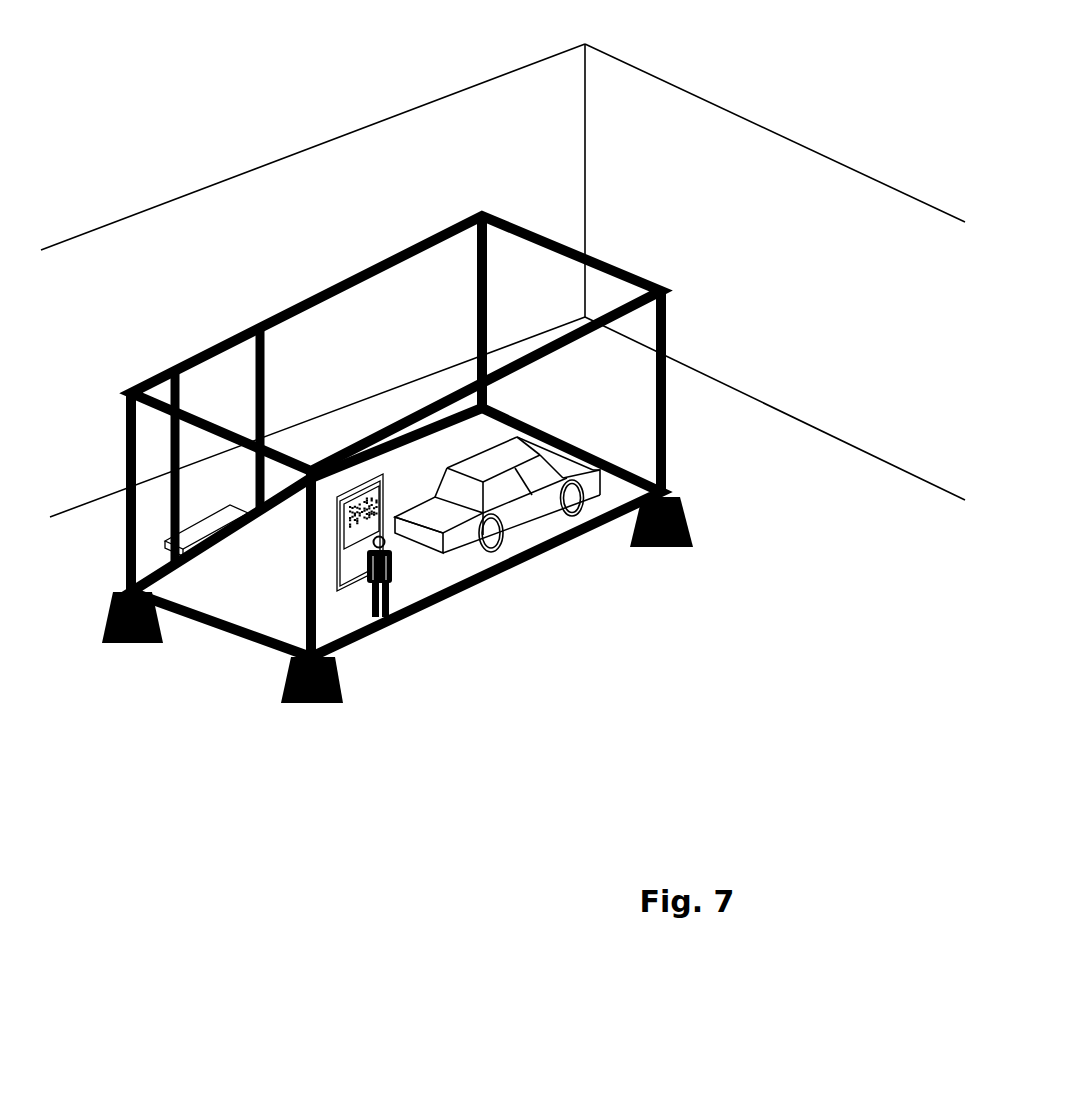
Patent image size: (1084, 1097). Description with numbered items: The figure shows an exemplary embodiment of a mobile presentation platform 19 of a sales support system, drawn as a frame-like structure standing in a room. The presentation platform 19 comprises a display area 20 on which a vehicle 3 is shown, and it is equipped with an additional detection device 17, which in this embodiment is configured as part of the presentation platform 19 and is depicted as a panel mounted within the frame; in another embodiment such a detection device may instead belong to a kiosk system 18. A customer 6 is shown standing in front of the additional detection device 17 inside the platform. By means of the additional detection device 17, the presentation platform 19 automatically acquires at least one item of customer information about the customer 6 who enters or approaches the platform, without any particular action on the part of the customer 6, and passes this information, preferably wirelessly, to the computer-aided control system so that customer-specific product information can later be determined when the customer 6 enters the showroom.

The presentation platform 19 is at (397, 355).
The display area 20 is at (460, 565).
The kiosk system 18 is at (398, 480).
The additional detection device 17 is at (347, 525).
The customer 6 is at (380, 567).
The vehicle 3 is at (493, 467).